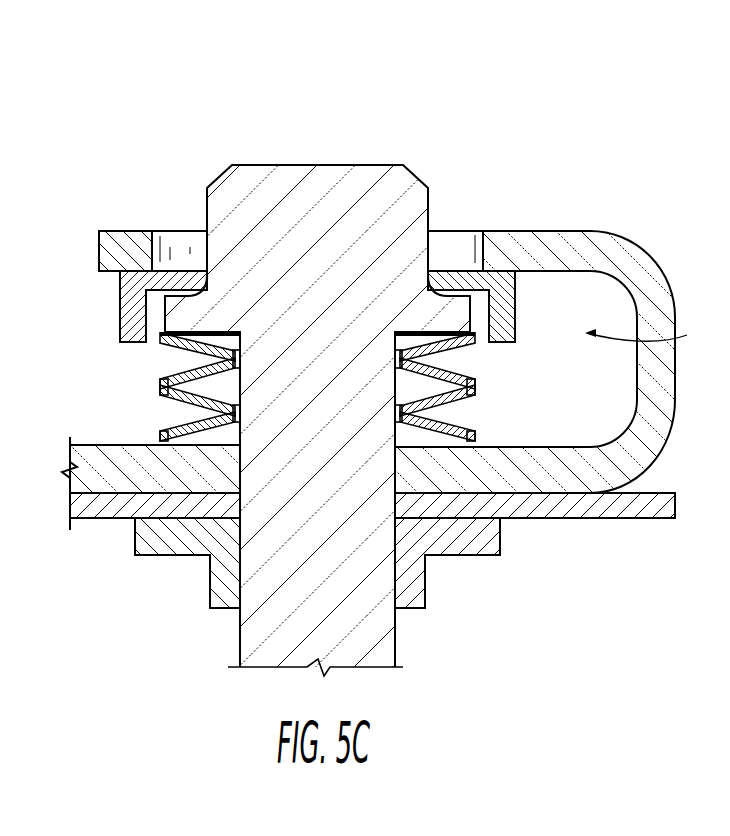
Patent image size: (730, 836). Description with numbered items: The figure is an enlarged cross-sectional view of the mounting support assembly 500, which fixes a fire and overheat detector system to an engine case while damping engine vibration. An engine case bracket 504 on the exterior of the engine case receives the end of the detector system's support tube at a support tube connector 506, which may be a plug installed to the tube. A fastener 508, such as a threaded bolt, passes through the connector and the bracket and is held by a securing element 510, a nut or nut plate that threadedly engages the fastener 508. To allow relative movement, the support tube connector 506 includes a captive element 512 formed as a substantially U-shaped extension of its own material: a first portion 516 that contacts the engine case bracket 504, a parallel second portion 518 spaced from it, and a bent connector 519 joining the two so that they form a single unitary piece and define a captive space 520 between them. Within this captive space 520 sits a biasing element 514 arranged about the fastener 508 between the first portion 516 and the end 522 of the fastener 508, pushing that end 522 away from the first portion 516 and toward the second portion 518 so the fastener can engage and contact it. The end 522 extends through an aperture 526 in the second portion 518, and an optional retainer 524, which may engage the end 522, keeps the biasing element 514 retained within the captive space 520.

The mounting support assembly 500 is at (484, 80).
The engine case bracket 504 is at (592, 507).
The support tube connector 506 is at (110, 470).
The fastener 508 is at (385, 630).
The securing element 510 is at (193, 540).
The captive element 512 is at (628, 270).
The biasing element 514 is at (480, 393).
The first portion 516 is at (505, 482).
The second portion 518 is at (520, 248).
The connector 519 is at (662, 393).
The captive space 520 is at (652, 314).
The end of the fastener 522 is at (311, 187).
The retainer 524 is at (132, 323).
The aperture 526 is at (178, 226).